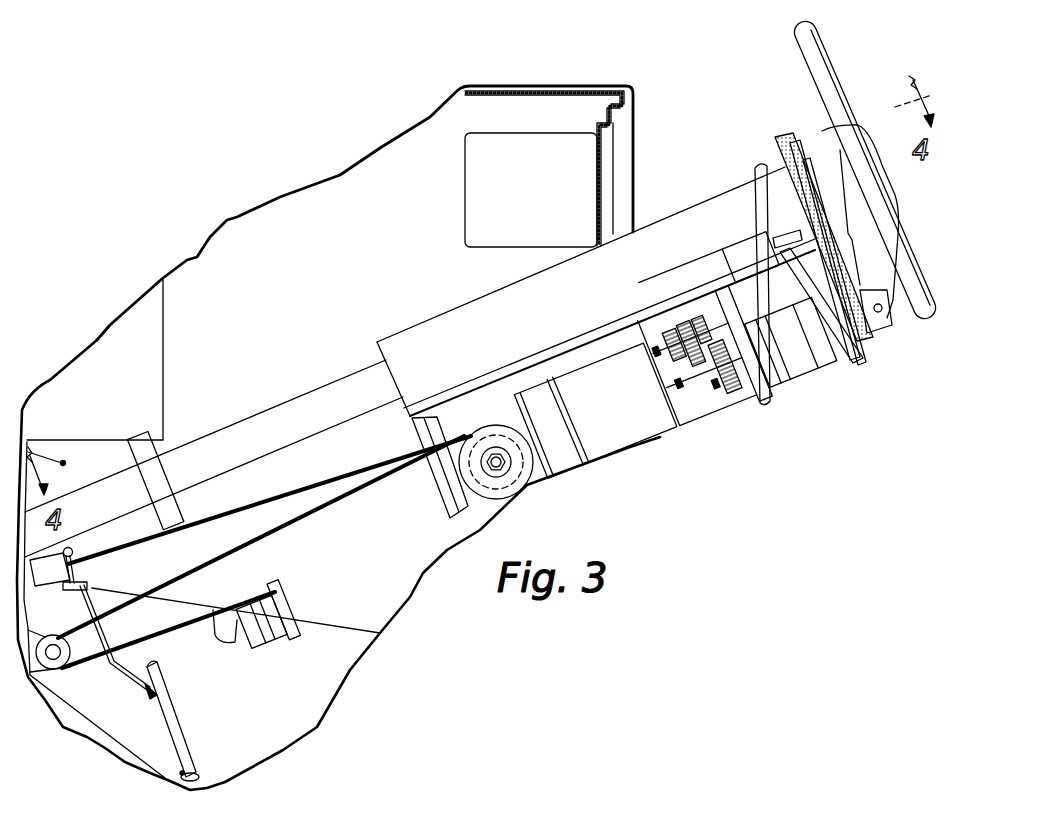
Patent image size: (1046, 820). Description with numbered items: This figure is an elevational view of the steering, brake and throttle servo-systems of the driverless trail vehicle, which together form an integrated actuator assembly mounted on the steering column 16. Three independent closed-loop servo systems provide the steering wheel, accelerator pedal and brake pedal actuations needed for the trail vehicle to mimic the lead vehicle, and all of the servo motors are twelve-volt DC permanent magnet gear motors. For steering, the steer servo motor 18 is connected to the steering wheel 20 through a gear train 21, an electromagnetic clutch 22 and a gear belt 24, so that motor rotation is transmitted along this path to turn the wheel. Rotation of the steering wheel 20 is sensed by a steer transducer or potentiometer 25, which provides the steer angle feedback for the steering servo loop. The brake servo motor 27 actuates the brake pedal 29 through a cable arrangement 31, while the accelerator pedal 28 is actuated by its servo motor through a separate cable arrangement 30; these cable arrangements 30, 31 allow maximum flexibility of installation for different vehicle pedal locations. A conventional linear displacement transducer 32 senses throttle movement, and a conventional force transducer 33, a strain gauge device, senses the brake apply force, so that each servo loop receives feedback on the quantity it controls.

The steering column 16 is at (698, 210).
The steer servo motor 18 is at (628, 442).
The steering wheel 20 is at (925, 328).
The gear train 21 is at (713, 400).
The electromagnetic clutch 22 is at (803, 377).
The gear belt 24 is at (877, 345).
The steer transducer or potentiometer 25 is at (757, 287).
The brake servo motor 27 is at (508, 477).
The accelerator pedal 28 is at (175, 733).
The brake pedal 29 is at (262, 650).
The cable arrangement 30 is at (300, 486).
The cable arrangement 31 is at (320, 508).
The linear displacement transducer 32 is at (73, 566).
The force transducer 33 is at (300, 628).